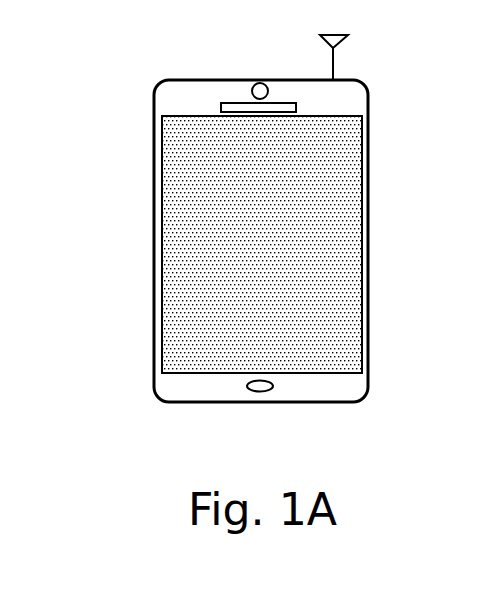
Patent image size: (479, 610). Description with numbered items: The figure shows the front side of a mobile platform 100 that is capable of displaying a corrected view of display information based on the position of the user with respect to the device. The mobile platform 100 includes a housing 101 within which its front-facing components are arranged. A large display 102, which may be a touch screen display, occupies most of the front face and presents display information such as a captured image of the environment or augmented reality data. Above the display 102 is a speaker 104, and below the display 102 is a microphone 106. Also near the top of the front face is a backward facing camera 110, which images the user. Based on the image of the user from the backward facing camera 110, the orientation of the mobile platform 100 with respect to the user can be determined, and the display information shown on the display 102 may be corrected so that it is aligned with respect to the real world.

The mobile platform 100 is at (145, 46).
The housing 101 is at (154, 269).
The display 102 is at (362, 251).
The speaker 104 is at (221, 107).
The microphone 106 is at (247, 384).
The backward facing camera 110 is at (258, 83).